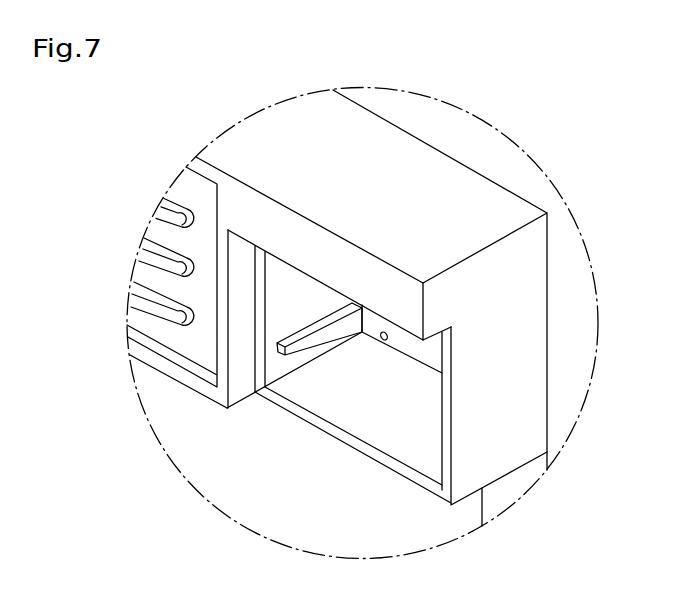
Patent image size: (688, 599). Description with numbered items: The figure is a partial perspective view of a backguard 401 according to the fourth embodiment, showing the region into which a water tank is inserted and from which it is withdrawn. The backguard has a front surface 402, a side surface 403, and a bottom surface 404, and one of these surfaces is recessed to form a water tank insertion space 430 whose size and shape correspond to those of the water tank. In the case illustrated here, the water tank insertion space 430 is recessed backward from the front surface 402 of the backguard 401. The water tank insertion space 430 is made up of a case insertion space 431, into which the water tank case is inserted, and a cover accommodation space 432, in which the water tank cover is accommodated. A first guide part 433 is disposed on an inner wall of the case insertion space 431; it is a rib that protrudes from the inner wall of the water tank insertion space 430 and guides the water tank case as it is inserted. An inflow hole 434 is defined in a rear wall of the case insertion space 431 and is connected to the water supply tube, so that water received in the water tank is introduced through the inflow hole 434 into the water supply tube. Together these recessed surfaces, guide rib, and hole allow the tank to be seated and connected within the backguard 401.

The upper housing block 401 is at (463, 197).
The front surface 402 is at (333, 256).
The side surface 403 is at (522, 371).
The bottom surface 404 is at (409, 452).
The water tank insertion space 430 is at (285, 421).
The case insertion space 431 is at (393, 407).
The cover accommodation space 432 is at (243, 345).
The first guide part 433 is at (291, 338).
The inflow hole 434 is at (382, 332).